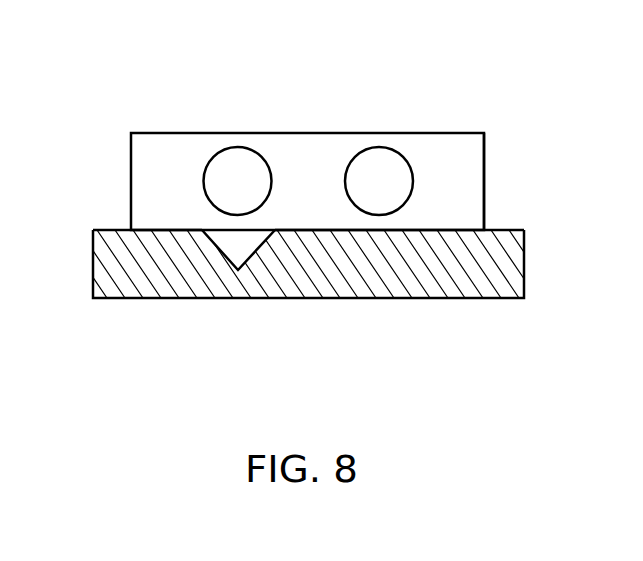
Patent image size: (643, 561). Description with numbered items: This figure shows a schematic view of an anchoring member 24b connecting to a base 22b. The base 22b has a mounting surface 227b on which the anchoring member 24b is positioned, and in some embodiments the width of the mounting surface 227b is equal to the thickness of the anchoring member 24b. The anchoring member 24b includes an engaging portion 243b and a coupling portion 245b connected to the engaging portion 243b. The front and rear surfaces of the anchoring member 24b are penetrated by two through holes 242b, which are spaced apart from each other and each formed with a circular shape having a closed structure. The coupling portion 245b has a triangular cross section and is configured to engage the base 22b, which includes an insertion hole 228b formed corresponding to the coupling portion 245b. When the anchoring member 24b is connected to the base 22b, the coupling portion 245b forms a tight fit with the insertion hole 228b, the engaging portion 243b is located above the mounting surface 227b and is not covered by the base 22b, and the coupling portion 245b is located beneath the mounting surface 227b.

The anchoring member 24b is at (151, 131).
The through holes 242b is at (238, 180).
The engaging portion 243b is at (465, 164).
The mounting surface 227b is at (502, 229).
The base 22b is at (524, 262).
The insertion hole 228b is at (215, 248).
The coupling portion 245b is at (243, 242).